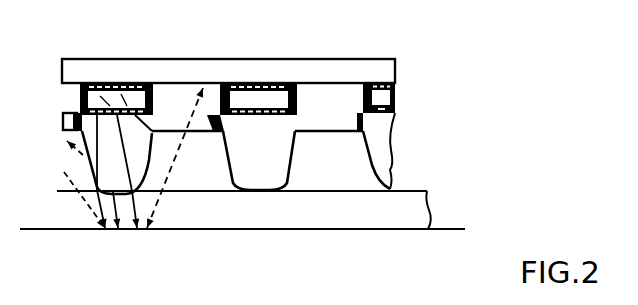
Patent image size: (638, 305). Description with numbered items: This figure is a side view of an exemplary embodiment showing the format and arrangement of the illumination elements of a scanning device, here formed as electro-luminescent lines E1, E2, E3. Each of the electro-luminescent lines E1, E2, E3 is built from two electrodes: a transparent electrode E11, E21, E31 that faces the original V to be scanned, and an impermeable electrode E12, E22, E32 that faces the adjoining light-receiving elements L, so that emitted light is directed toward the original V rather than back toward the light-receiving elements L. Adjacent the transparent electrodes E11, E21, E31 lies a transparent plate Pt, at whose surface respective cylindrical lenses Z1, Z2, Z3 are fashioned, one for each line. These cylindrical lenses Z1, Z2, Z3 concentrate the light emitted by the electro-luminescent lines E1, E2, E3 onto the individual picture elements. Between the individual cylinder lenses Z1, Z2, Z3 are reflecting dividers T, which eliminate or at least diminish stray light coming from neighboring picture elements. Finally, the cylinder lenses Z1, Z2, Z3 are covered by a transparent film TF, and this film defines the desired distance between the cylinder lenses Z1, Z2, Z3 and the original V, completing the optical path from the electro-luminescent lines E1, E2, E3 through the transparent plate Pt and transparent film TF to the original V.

The light-receiving elements L is at (62, 72).
The electro-luminescent line E1 is at (118, 100).
The transparent electrode E11 is at (80, 102).
The impermeable electrode E12 is at (100, 82).
The electro-luminescent line E2 is at (265, 100).
The transparent electrode E21 is at (260, 117).
The impermeable electrode E22 is at (243, 87).
The electro-luminescent line E3 is at (387, 100).
The transparent electrode E31 is at (395, 110).
The impermeable electrode E32 is at (376, 86).
The transparent plate Pt is at (60, 124).
The cylindrical lens Z1 is at (84, 153).
The cylindrical lens Z2 is at (258, 177).
The cylindrical lens Z3 is at (384, 178).
The reflecting dividers T is at (177, 158).
The transparent film TF is at (66, 219).
The original V is at (445, 232).